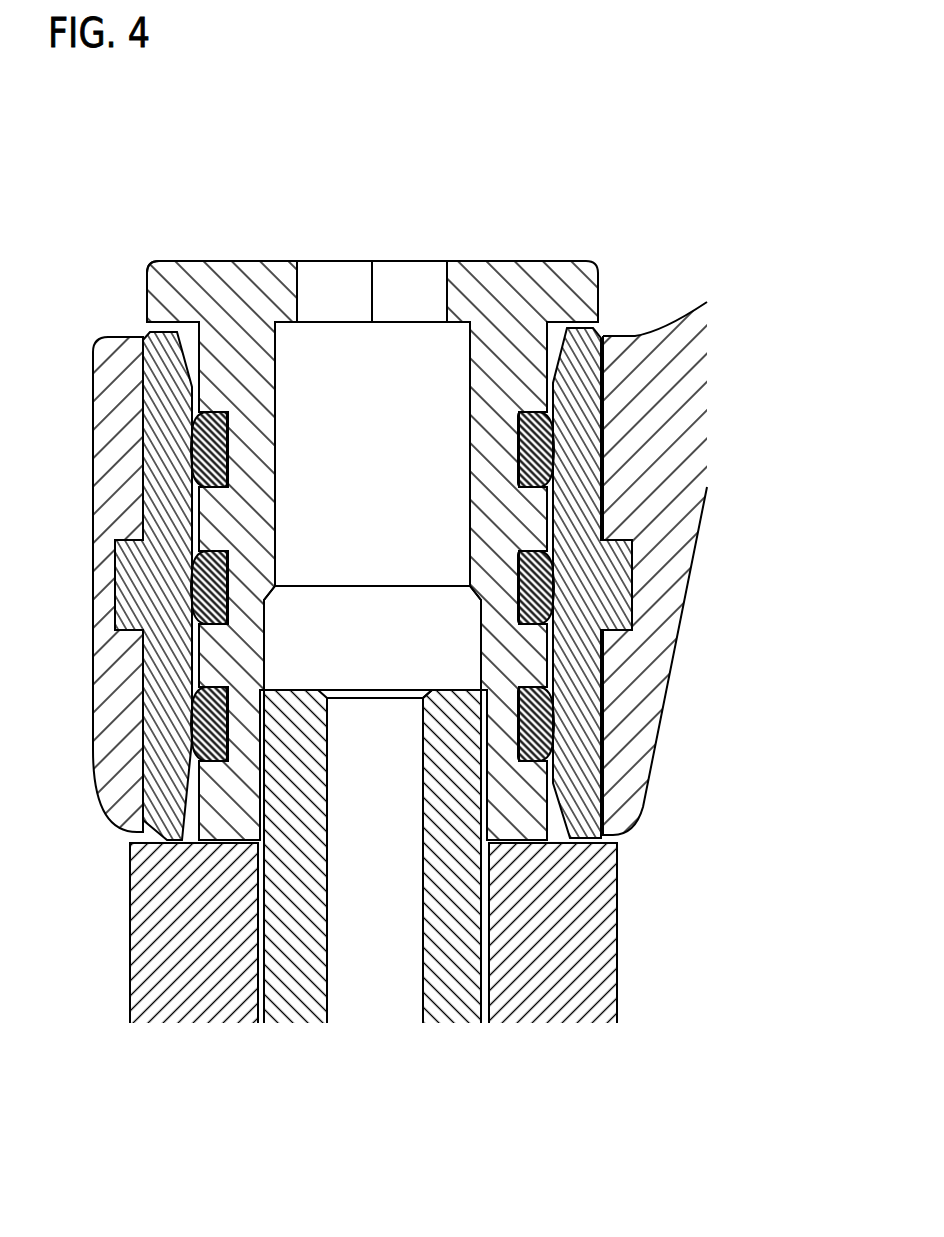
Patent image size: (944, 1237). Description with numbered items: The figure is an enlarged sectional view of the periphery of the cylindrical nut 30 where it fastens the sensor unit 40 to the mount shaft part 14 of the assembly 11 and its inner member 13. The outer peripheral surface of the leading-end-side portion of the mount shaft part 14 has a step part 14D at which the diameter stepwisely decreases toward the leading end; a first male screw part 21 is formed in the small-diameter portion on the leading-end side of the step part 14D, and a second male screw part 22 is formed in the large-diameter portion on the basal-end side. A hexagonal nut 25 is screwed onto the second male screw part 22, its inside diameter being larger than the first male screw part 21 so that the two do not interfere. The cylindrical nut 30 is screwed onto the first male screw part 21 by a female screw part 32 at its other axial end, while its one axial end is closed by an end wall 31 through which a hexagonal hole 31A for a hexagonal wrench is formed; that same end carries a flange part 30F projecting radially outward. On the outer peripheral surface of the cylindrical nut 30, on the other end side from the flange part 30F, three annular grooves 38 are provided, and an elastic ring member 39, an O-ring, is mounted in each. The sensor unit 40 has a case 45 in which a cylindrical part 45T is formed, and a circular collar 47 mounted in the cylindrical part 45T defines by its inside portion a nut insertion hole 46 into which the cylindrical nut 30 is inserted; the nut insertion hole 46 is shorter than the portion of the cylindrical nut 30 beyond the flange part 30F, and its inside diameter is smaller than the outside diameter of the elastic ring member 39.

The connector 11 is at (294, 1040).
The inner conductor 13 is at (455, 1000).
The mount shaft part 14 is at (258, 858).
The step part 14D is at (487, 838).
The first male screw part 21 is at (265, 803).
The second male screw part 22 is at (257, 945).
The hexagonal nut 25 is at (152, 913).
The cylindrical nut 30 is at (186, 496).
The flange part 30F is at (160, 286).
The end wall 31 is at (526, 506).
The hexagonal hole 31A is at (412, 280).
The female screw part 32 is at (262, 766).
The annular groove 38 is at (532, 484).
The elastic ring member 39 is at (113, 605).
The sensor unit 40 is at (371, 521).
The case 45 is at (633, 358).
The cylindrical part 45T is at (125, 663).
The nut insertion hole 46 is at (193, 517).
The circular collar 47 is at (333, 584).